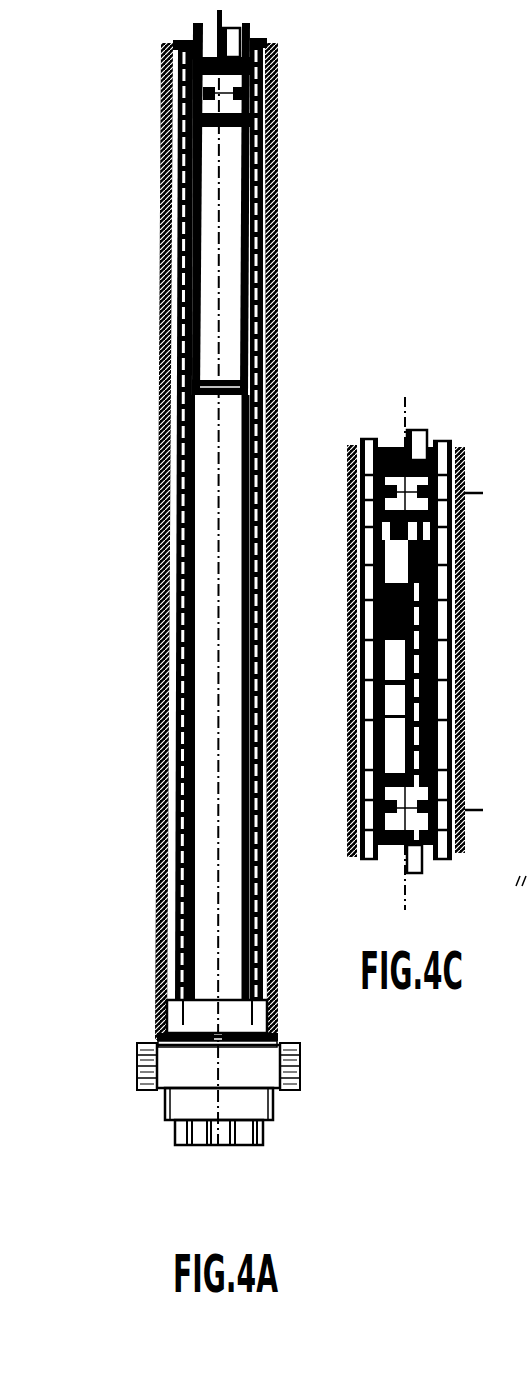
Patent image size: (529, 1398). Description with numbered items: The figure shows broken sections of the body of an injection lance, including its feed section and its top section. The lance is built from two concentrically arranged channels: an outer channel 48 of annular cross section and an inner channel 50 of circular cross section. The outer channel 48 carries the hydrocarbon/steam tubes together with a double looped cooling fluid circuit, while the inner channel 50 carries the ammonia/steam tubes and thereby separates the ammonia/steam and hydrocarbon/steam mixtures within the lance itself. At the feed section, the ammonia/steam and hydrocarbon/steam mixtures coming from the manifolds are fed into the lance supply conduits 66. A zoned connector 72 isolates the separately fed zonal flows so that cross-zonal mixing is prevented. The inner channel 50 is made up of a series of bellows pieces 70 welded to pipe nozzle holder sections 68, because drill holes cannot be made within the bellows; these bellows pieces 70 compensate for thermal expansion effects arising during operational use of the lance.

In FIG. 4A, the outer channel 48 is at (172, 757).
In FIG. 4A, the inner channel 50 is at (218, 912).
In FIG. 4A, the lance supply conduits 66 is at (168, 1141).
In FIG. 4A, the pipe nozzle holder sections 68 is at (197, 298).
In FIG. 4A, the bellows pieces 70 is at (200, 92).
In FIG. 4C, the zoned connector 72 is at (462, 646).